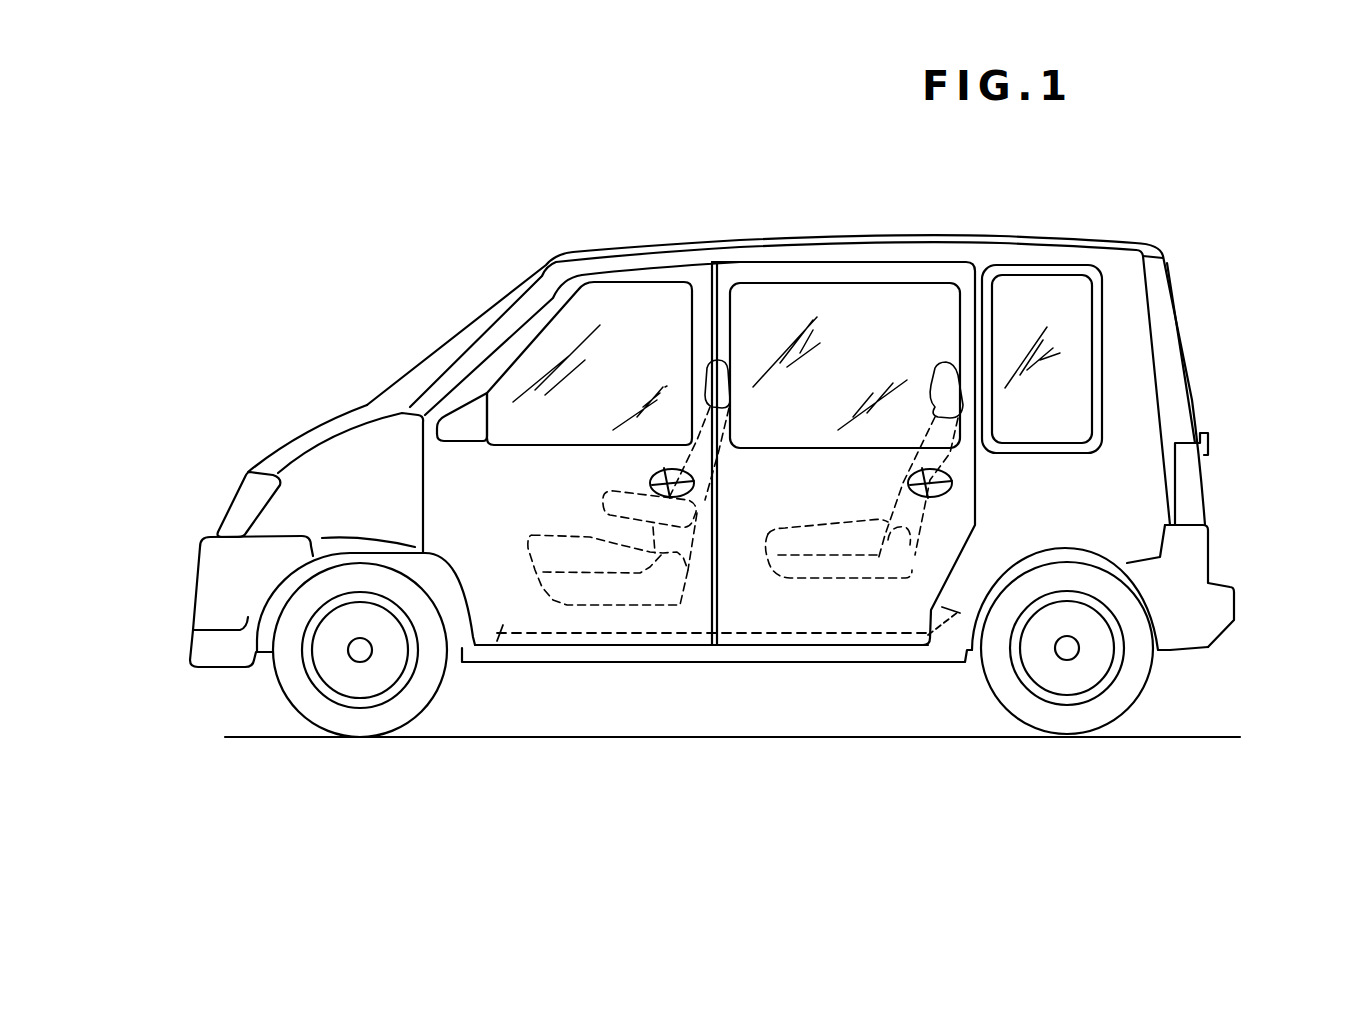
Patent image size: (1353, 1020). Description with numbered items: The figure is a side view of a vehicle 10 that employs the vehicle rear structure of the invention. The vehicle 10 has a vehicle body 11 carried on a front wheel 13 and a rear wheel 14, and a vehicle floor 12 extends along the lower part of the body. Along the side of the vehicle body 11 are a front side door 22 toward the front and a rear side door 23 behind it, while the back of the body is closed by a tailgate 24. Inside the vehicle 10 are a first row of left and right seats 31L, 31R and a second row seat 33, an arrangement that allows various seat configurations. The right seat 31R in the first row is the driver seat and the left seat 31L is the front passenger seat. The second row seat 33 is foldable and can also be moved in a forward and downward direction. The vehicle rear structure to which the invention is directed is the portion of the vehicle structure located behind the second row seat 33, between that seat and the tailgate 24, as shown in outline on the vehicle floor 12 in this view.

The vehicle 10 is at (352, 145).
The vehicle body 11 is at (1118, 256).
The vehicle floor 12 is at (607, 633).
The front wheel 13 is at (297, 710).
The rear wheel 14 is at (1137, 703).
The front side door 22 is at (525, 612).
The rear side door 23 is at (777, 610).
The tailgate 24 is at (1192, 364).
The left seat 31L is at (668, 462).
The right seat 31R is at (930, 483).
The second row seat 33 is at (922, 417).